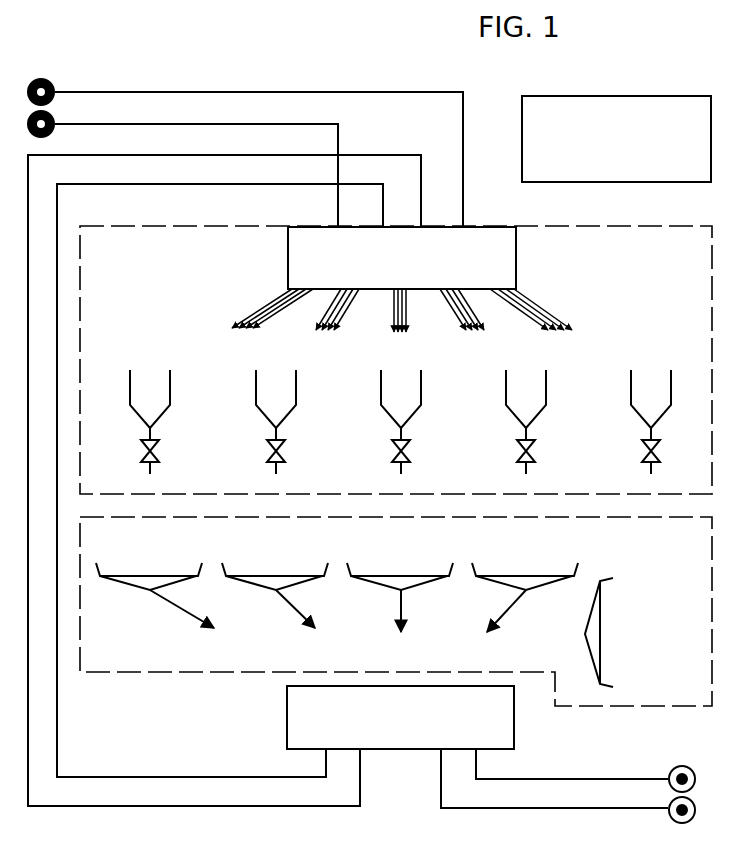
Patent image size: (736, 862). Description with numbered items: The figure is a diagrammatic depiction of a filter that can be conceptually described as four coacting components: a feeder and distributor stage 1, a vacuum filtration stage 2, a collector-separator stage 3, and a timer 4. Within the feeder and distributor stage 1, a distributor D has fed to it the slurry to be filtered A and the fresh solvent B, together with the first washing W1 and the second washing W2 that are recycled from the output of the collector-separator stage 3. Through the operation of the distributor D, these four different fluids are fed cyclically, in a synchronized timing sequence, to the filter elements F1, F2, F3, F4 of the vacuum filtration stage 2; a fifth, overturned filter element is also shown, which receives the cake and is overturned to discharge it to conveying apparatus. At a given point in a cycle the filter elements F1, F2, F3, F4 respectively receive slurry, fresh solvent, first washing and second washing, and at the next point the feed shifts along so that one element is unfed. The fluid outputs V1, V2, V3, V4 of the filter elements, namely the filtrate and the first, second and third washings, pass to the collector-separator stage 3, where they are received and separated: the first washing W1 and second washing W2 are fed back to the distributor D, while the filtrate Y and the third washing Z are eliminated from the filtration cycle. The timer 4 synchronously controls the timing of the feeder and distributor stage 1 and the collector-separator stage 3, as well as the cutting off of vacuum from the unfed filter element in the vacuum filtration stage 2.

The slurry to be filtered A is at (110, 92).
The fresh solvent B is at (110, 124).
The first washing W1 is at (126, 184).
The second washing W2 is at (126, 155).
The filtrate Y is at (650, 779).
The third washing Z is at (651, 808).
The distributor D is at (393, 275).
The feeder and distributor stage 1 is at (665, 277).
The vacuum filtration stage 2 is at (662, 598).
The collector-separator stage 3 is at (393, 732).
The timer 4 is at (607, 155).
The filter element F1 is at (183, 576).
The filter element F2 is at (308, 576).
The filter element F3 is at (433, 576).
The filter element F4 is at (558, 576).
The fluid output V1 is at (204, 618).
The fluid output V2 is at (304, 618).
The fluid output V3 is at (401, 620).
The fluid output V4 is at (498, 622).